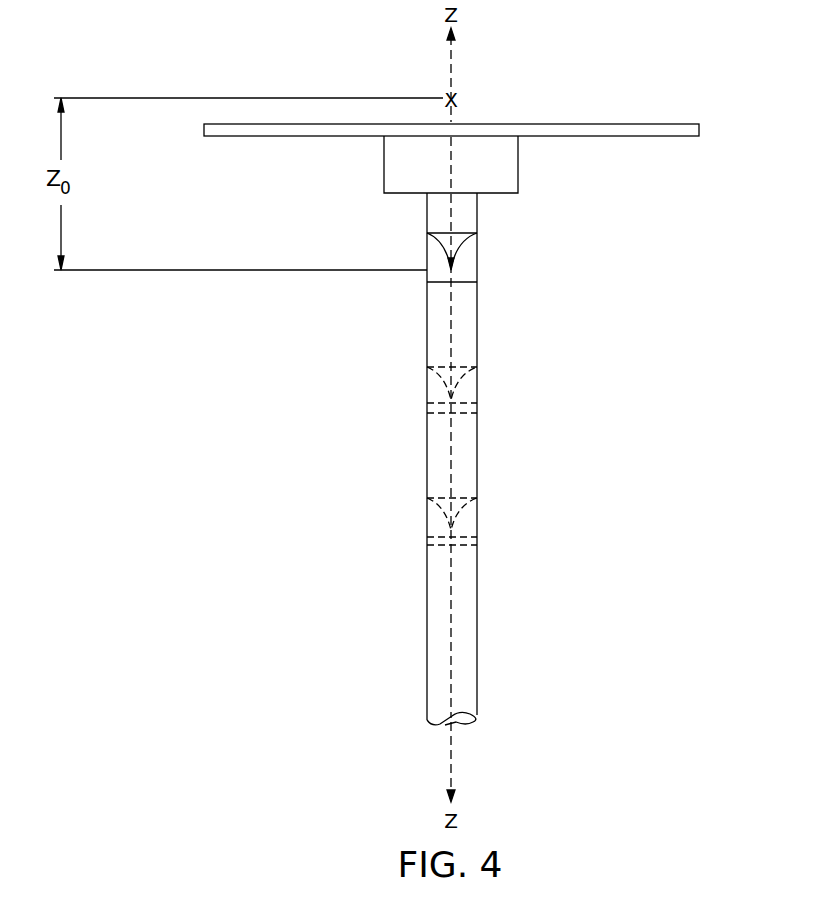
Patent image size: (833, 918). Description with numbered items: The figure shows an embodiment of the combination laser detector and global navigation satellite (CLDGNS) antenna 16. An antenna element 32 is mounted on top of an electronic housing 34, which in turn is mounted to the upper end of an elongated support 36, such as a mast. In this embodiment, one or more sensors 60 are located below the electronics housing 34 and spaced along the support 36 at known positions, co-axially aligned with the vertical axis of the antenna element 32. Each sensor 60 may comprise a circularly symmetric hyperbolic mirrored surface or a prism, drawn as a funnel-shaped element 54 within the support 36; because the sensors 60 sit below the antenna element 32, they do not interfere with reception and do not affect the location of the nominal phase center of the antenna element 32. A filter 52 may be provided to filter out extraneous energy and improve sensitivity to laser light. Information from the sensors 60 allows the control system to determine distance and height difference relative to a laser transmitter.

The CLDGNS antenna 16 is at (738, 97).
The antenna element 32 is at (645, 130).
The electronic housing 34 is at (518, 167).
The elongated support 36 is at (427, 620).
The filter 52 is at (428, 278).
The funnel 54 is at (430, 246).
The sensors 60 is at (490, 253).